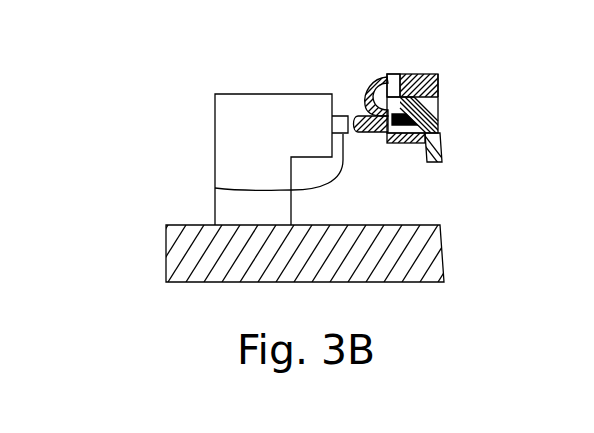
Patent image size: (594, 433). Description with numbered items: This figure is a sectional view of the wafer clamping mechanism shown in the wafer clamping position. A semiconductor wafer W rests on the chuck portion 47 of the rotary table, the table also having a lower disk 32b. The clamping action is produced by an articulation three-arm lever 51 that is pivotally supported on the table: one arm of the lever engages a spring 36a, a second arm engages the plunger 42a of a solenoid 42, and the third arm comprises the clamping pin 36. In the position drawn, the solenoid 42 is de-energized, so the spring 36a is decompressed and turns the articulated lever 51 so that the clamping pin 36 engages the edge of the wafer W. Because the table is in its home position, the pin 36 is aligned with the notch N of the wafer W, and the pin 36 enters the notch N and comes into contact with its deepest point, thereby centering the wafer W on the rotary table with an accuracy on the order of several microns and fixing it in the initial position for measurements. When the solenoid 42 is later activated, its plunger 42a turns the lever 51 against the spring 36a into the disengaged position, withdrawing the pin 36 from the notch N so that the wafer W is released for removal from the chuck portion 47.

The solenoid 42 is at (215, 141).
The plunger 42a is at (215, 188).
The clamping pin 36 is at (355, 94).
The spring 36a is at (404, 143).
The articulation three-arm lever 51 is at (375, 78).
The chuck portion 47 is at (440, 77).
The lower disk 32b is at (440, 116).
The notch N is at (390, 73).
The semiconductor wafer W is at (425, 73).